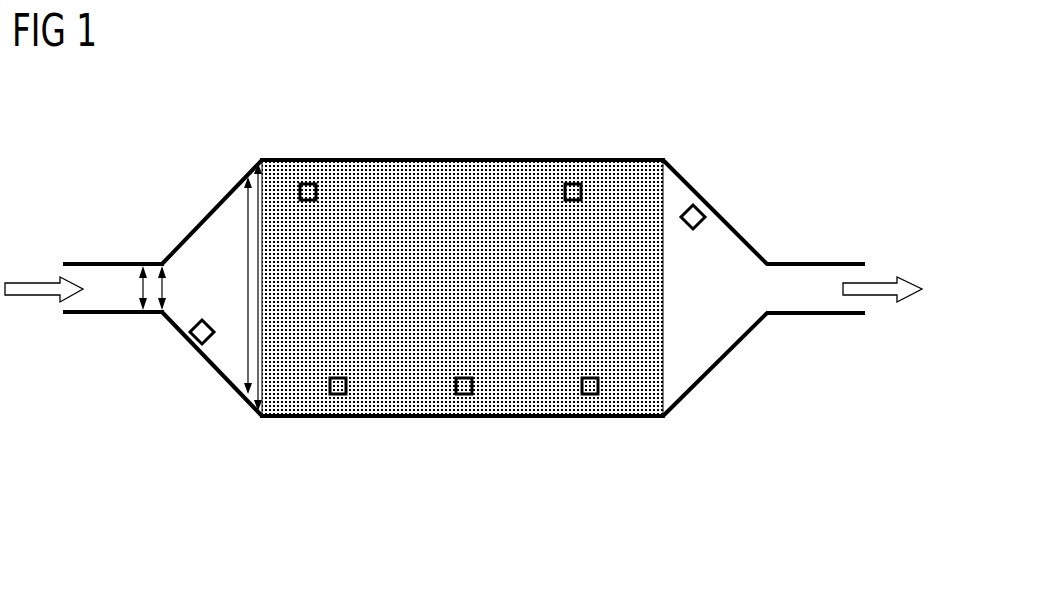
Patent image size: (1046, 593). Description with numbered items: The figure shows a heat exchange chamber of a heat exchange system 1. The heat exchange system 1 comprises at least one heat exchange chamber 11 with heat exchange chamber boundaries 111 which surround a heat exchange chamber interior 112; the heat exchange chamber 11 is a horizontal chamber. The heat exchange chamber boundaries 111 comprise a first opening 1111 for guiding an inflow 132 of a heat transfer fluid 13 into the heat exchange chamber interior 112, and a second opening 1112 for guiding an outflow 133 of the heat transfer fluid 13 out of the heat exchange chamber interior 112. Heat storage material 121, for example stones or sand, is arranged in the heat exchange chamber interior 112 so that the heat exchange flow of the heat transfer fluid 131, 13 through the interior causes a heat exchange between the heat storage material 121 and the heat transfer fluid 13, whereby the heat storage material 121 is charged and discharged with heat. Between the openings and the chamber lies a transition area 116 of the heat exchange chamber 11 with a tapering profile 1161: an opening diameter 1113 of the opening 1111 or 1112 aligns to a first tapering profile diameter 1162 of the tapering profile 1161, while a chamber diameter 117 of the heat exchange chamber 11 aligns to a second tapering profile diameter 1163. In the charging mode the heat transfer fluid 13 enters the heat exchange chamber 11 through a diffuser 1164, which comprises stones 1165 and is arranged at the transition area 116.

The heat exchange system 1 is at (826, 81).
The heat exchange chamber 11 is at (666, 148).
The heat exchange chamber boundaries 111 is at (650, 419).
The heat exchange chamber interior 112 is at (663, 368).
The first opening 1111 is at (92, 304).
The second opening 1112 is at (814, 302).
The opening diameter 1113 is at (147, 290).
The transition area 116 is at (237, 200).
The tapering profile 1161 is at (258, 164).
The first tapering profile diameter 1162 is at (165, 290).
The second tapering profile diameter 1163 is at (247, 226).
The diffuser 1164 is at (233, 366).
The stones 1165 is at (197, 347).
The chamber diameter 117 is at (259, 313).
The heat storage material 121 is at (308, 184).
The heat transfer fluid 13 is at (97, 280).
The heat transfer fluid 131 is at (478, 169).
The inflow 132 is at (22, 295).
The outflow 133 is at (885, 294).